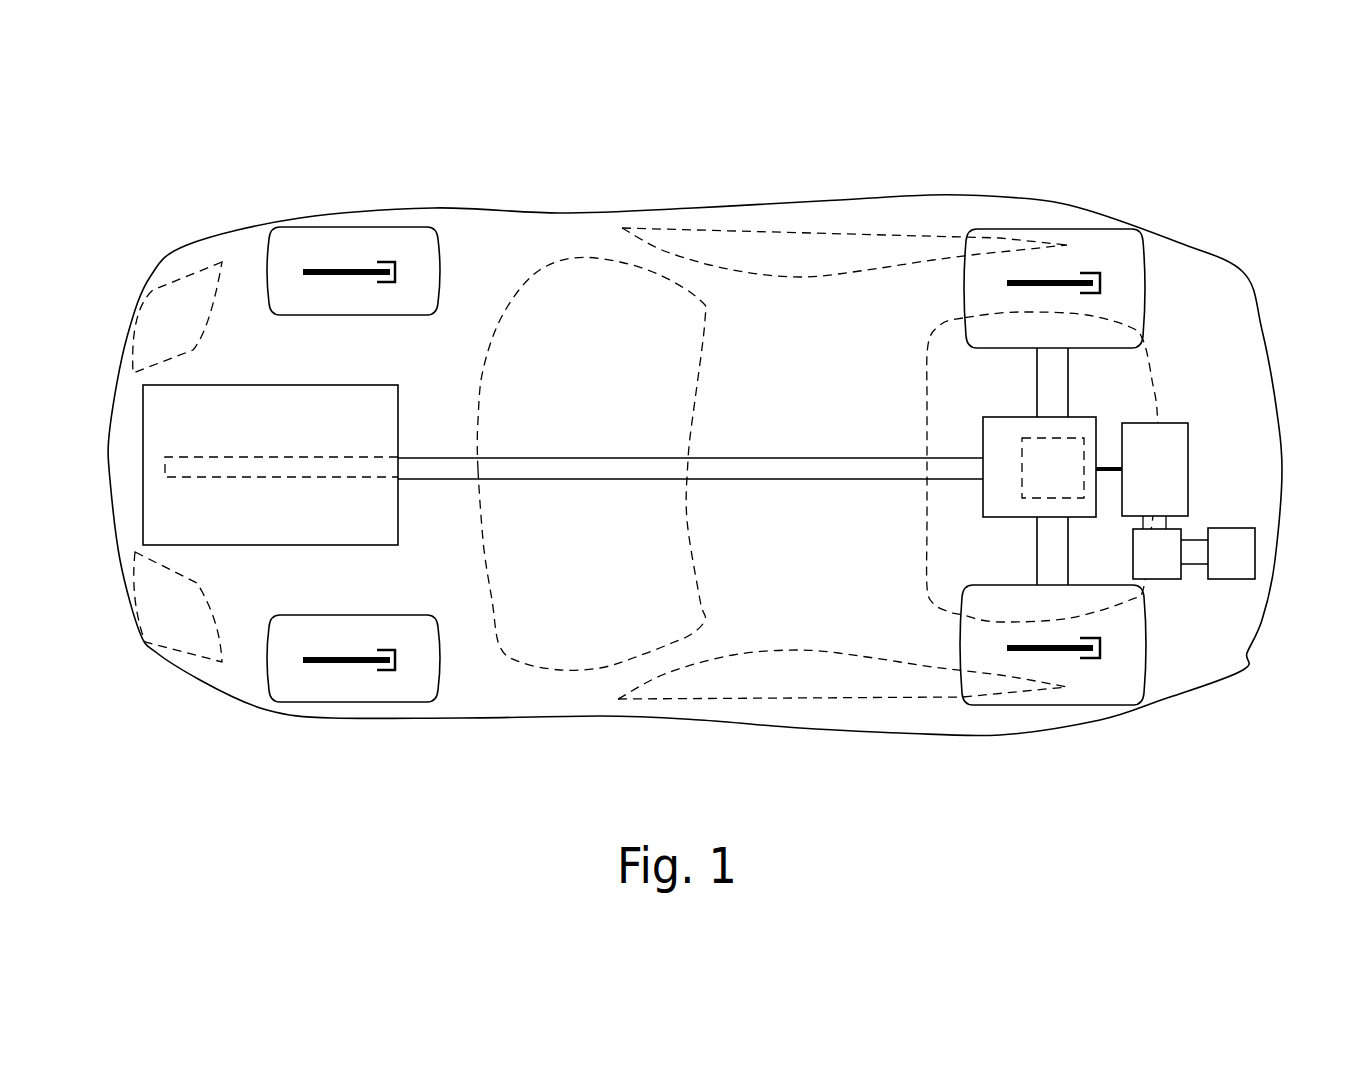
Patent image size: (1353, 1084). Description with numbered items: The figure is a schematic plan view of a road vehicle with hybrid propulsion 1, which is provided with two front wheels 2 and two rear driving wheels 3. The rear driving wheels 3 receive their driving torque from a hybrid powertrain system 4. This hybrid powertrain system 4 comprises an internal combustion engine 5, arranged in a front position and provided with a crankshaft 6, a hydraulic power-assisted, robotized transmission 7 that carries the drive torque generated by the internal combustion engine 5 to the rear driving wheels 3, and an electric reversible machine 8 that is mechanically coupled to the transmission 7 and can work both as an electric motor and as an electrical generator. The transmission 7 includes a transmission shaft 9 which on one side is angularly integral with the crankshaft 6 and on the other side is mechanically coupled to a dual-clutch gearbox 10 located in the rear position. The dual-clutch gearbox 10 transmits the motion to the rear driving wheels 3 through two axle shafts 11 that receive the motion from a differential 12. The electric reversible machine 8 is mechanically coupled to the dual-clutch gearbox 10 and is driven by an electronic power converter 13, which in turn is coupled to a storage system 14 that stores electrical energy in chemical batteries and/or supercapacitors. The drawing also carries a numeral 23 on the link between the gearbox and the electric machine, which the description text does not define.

The road vehicle with hybrid propulsion 1 is at (1215, 755).
The front wheels 2 is at (291, 245).
The rear driving wheels 3 is at (1130, 247).
The hybrid powertrain system 4 is at (190, 233).
The internal combustion engine 5 is at (150, 412).
The crankshaft 6 is at (253, 467).
The transmission 7 is at (723, 188).
The electric reversible machine 8 is at (1155, 469).
The transmission shaft 9 is at (742, 470).
The dual-clutch gearbox 10 is at (995, 503).
The axle shafts 11 is at (1048, 372).
The differential 12 is at (1053, 468).
The electronic power converter 13 is at (1157, 547).
The storage system 14 is at (1218, 553).
The signal line 23 is at (1110, 465).